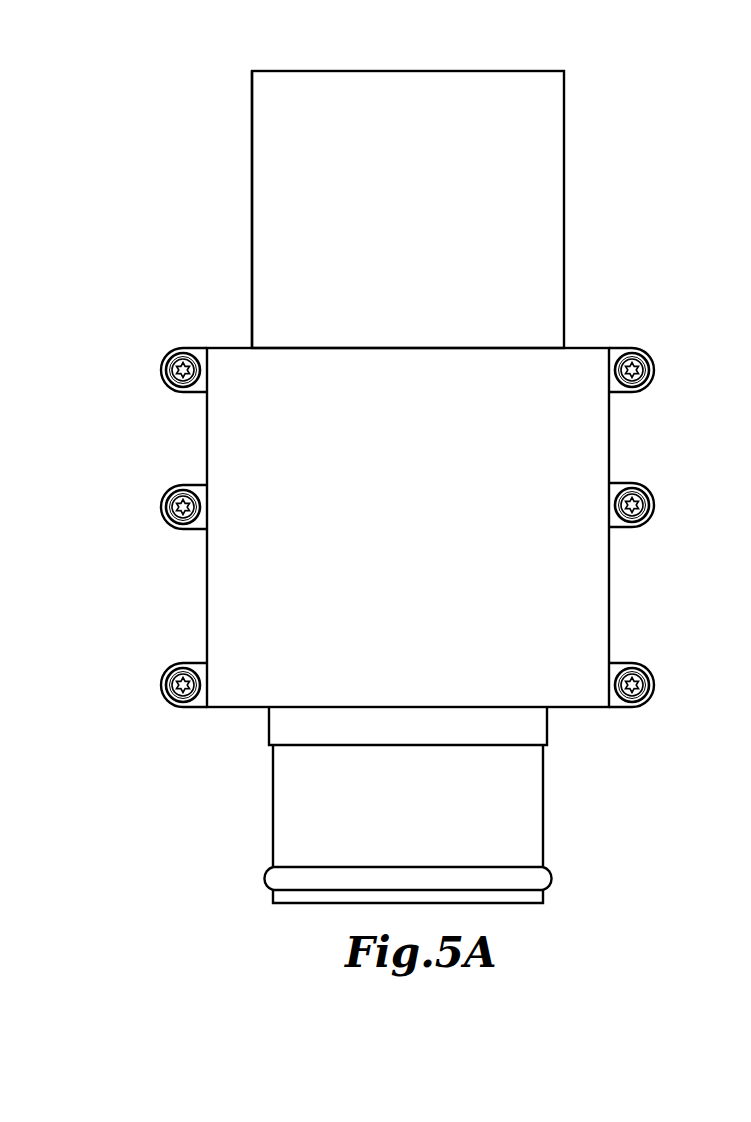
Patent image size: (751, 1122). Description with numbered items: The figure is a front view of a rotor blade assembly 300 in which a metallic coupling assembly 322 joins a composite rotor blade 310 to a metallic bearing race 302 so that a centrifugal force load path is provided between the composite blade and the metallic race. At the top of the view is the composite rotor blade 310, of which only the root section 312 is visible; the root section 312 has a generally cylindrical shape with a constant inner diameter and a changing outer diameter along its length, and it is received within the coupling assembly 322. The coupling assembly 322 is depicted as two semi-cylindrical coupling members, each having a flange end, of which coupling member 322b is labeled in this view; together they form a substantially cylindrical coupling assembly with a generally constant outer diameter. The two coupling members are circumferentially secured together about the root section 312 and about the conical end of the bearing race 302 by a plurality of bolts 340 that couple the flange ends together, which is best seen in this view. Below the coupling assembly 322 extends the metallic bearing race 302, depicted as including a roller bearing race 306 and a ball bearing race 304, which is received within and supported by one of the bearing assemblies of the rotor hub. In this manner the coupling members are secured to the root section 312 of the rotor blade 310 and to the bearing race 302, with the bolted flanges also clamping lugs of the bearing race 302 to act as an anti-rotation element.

The rotor blade assembly 300 is at (617, 222).
The composite rotor blade 310 is at (258, 137).
The root section 312 is at (258, 210).
The metallic coupling assembly 322 is at (196, 448).
The coupling member 322b is at (408, 527).
The bolts 340 is at (646, 353).
The roller bearing race 306 is at (277, 728).
The metallic bearing race 302 is at (277, 793).
The ball bearing race 304 is at (286, 878).